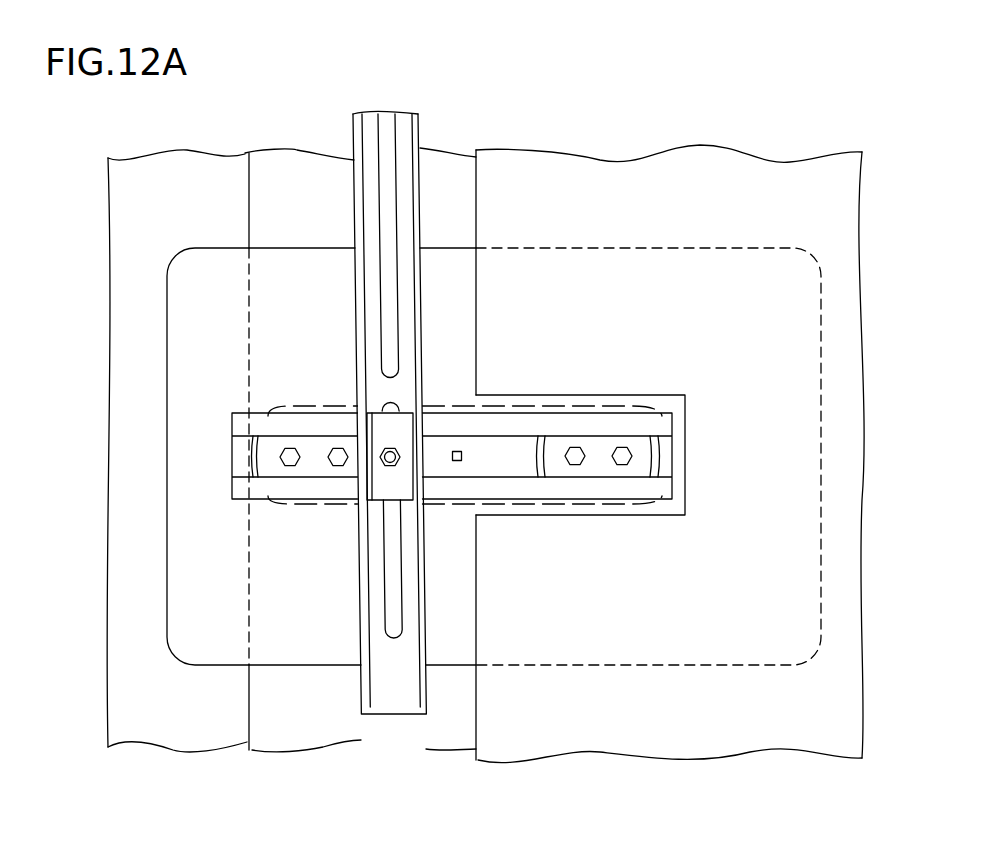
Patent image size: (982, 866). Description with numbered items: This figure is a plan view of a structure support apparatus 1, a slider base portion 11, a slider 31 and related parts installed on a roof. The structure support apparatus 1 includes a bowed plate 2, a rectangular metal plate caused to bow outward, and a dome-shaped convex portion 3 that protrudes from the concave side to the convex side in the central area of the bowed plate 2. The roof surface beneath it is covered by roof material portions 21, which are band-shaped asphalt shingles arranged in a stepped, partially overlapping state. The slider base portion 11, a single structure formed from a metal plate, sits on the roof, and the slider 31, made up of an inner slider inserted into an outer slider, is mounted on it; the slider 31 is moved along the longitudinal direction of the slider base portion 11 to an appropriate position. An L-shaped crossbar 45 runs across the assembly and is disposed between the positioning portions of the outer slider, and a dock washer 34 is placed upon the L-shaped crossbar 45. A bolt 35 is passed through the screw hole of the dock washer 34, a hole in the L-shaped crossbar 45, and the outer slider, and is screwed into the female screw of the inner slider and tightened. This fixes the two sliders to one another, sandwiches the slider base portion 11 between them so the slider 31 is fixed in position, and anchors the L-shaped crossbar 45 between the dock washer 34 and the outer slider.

The structure support apparatus 1 is at (158, 465).
The bowed plate 2 is at (297, 267).
The dome-shaped convex portion 3 is at (322, 405).
The slider base portion 11 is at (655, 397).
The roof material portions 21 is at (197, 737).
The slider 31 is at (425, 423).
The dock washer 34 is at (377, 485).
The bolt 35 is at (398, 457).
The L-shaped crossbar 45 is at (400, 145).